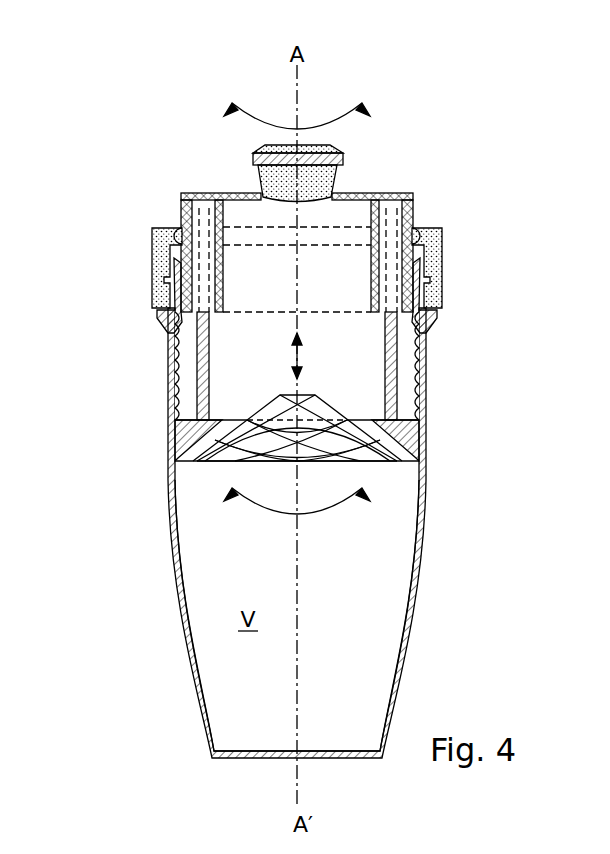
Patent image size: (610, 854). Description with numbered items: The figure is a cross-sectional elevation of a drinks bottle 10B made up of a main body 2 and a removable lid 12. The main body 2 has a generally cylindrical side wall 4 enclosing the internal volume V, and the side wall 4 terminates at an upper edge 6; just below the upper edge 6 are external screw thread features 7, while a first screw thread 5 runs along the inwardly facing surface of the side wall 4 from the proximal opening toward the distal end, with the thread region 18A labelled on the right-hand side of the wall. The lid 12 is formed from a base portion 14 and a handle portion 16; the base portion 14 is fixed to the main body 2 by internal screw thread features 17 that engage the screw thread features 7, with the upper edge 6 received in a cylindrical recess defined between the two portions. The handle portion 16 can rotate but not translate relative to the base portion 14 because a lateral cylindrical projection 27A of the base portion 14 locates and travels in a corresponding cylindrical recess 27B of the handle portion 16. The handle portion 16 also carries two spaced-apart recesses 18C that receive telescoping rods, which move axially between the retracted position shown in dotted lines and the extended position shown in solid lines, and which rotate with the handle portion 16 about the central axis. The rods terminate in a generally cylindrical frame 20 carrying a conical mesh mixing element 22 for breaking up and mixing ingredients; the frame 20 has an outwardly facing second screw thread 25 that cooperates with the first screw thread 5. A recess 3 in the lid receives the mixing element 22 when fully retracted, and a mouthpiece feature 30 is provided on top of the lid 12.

The drinks bottle 10B is at (478, 143).
The main body 2 is at (430, 516).
The side wall 4 is at (178, 558).
The first screw thread 5 is at (172, 410).
The thread 18A is at (418, 363).
The frame 20 is at (414, 436).
The second screw thread 25 is at (200, 456).
The mixing element 22 is at (318, 410).
The recess 3 is at (262, 296).
The handle portion 16 is at (413, 207).
The cylindrical recess 27B is at (203, 212).
The cylindrical projection 27A is at (417, 235).
The mouthpiece feature 30 is at (343, 158).
The screw thread features 17 is at (160, 288).
The screw thread features 7 is at (166, 275).
The upper edge 6 is at (425, 250).
The base portion 14 is at (444, 273).
The recesses 18C is at (186, 225).
The lid 12 is at (482, 186).